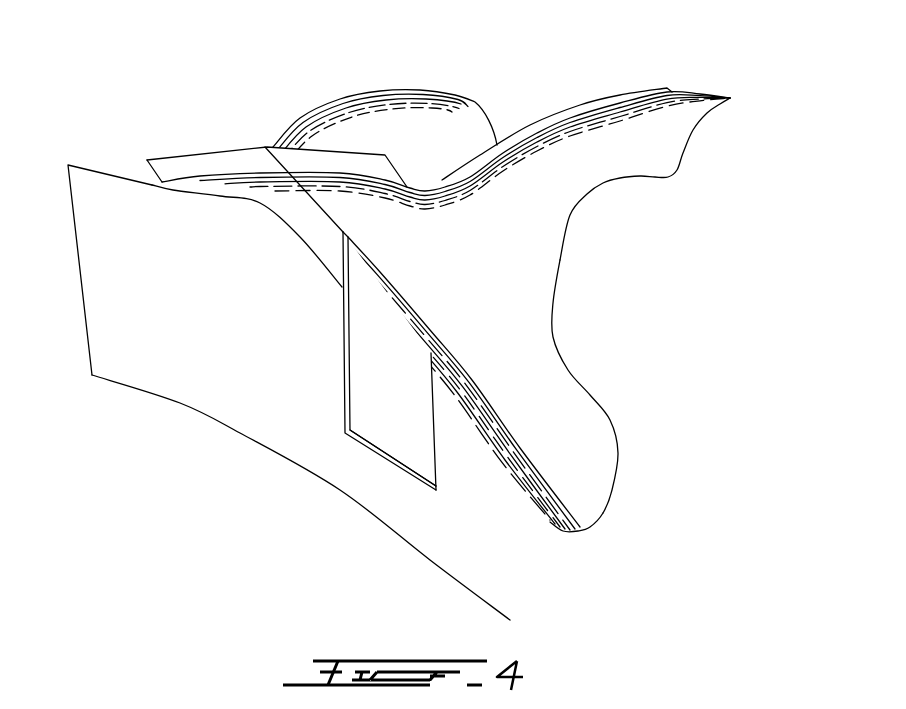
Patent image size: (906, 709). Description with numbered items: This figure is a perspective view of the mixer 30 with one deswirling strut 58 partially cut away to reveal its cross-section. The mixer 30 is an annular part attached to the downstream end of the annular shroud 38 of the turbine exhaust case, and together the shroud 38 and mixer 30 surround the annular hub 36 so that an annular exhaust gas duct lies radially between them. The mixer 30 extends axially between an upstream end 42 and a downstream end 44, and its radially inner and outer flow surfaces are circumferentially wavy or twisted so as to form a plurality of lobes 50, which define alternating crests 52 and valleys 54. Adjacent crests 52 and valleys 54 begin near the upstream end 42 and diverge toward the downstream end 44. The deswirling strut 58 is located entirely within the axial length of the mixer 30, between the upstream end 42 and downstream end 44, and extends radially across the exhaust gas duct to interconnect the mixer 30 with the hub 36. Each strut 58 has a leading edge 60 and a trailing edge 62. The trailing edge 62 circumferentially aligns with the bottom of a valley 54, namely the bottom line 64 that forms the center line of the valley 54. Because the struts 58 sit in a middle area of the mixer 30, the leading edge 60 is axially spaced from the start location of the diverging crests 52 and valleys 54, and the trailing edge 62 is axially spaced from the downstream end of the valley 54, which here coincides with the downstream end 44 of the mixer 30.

The mixer 30 is at (452, 97).
The annular hub 36 is at (180, 404).
The annular shroud 38 is at (92, 168).
The upstream end 42 is at (147, 166).
The downstream end 44 is at (622, 480).
The lobes 50 is at (660, 138).
The crests 52 is at (697, 88).
The valleys 54 is at (582, 508).
The deswirling struts 58 is at (397, 435).
The leading edge 60 is at (345, 363).
The trailing edge 62 is at (437, 452).
The bottom line 64 is at (523, 473).